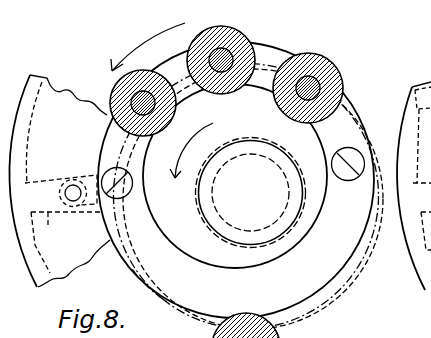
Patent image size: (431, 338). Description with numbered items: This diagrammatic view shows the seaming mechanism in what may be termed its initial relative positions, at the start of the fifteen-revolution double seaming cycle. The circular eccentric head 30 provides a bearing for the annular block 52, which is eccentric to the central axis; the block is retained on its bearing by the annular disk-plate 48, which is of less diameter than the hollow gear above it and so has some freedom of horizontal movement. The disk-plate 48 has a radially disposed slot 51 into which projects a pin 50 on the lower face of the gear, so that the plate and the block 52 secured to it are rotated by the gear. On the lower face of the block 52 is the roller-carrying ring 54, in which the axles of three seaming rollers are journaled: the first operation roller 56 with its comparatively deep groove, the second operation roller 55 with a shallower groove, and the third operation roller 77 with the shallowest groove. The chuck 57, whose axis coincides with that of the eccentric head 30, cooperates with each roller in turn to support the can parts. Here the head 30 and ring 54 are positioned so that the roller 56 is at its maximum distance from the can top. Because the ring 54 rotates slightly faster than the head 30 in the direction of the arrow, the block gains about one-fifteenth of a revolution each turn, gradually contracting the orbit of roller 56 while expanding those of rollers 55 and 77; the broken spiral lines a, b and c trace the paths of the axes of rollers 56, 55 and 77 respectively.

The eccentric head 30 is at (236, 180).
The disk-plate 48 is at (40, 96).
The pin 50 is at (75, 175).
The slot 51 is at (65, 242).
The annular block 52 is at (31, 266).
The ring 54 is at (235, 194).
The second operation roller 55 is at (239, 30).
The first operation roller 56 is at (112, 92).
The chuck 57 is at (200, 205).
The third operation roller 77 is at (332, 58).
The broken spiral line a is at (120, 137).
The broken spiral line b is at (122, 232).
The broken spiral line c is at (165, 291).